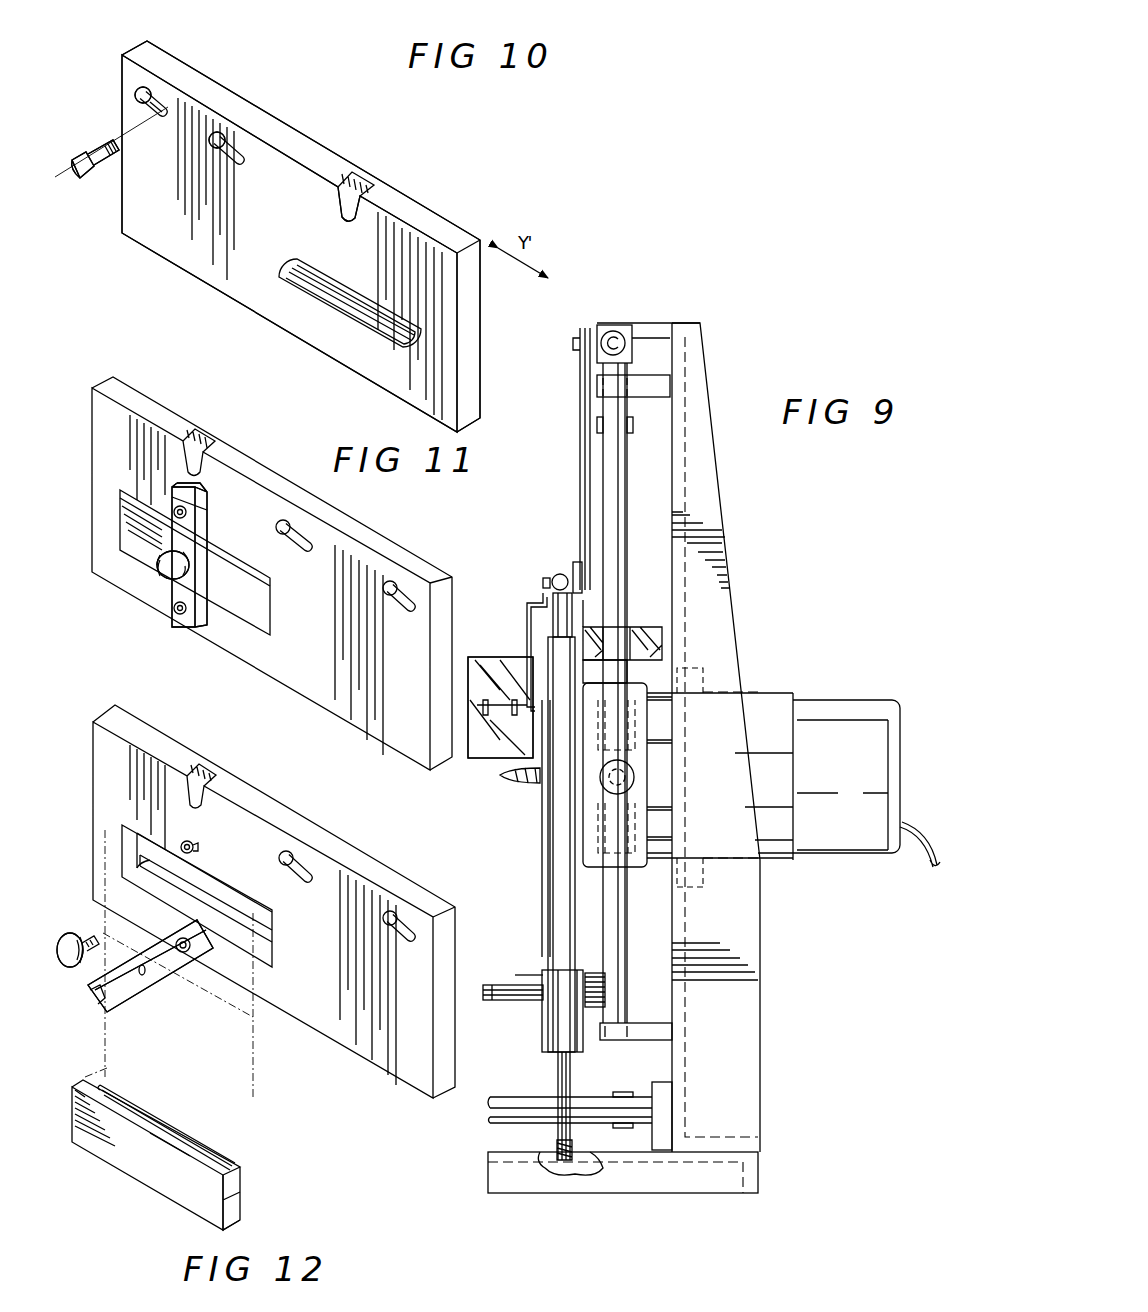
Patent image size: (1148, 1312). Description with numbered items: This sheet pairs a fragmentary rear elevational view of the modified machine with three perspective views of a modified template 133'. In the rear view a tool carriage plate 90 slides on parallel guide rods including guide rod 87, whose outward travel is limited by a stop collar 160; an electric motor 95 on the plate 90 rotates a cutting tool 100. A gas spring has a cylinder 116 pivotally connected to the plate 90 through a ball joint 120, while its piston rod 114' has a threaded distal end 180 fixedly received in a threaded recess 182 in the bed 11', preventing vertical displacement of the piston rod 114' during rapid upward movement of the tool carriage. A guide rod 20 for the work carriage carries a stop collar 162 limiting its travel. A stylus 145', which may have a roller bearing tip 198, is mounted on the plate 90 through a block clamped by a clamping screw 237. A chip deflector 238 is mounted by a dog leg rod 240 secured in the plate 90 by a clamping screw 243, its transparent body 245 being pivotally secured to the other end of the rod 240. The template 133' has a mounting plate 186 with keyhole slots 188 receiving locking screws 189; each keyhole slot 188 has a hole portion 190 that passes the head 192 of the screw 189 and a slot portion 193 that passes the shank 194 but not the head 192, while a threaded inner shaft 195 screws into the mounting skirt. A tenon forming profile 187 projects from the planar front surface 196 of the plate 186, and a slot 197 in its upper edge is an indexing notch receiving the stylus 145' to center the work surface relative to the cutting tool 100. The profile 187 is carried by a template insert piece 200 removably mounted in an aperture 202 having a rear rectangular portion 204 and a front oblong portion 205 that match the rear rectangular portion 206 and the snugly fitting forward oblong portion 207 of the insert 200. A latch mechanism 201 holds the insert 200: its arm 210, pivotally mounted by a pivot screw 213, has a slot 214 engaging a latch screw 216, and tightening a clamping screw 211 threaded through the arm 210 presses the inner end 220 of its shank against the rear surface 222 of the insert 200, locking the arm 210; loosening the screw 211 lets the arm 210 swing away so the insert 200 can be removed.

In FIG. 10, the template 133' is at (301, 232).
In FIG. 10, the mounting plate 186 is at (330, 148).
In FIG. 11, the mounting plate 186 is at (260, 473).
In FIG. 12, the mounting plate 186 is at (267, 810).
In FIG. 10, the tenon forming profile 187 is at (350, 320).
In FIG. 12, the tenon forming profile 187 is at (240, 1177).
In FIG. 10, the keyhole slot 188 is at (127, 98).
In FIG. 11, the keyhole slot 188 is at (300, 557).
In FIG. 10, the locking screw 189 is at (102, 135).
In FIG. 10, the hole portion 190 is at (147, 85).
In FIG. 10, the head 192 is at (83, 174).
In FIG. 10, the slot portion 193 is at (160, 92).
In FIG. 10, the shank 194 is at (108, 168).
In FIG. 10, the threaded inner shaft 195 is at (113, 160).
In FIG. 10, the planar front surface 196 is at (237, 135).
In FIG. 10, the slot 197 is at (366, 185).
In FIG. 11, the slot 197 is at (203, 448).
In FIG. 12, the slot 197 is at (210, 775).
In FIG. 11, the template insert piece 200 is at (252, 598).
In FIG. 12, the template insert piece 200 is at (155, 1167).
In FIG. 11, the latch mechanism 201 is at (152, 578).
In FIG. 12, the latch mechanism 201 is at (157, 1033).
In FIG. 12, the aperture 202 is at (258, 900).
In FIG. 12, the rear rectangular portion 204 is at (275, 963).
In FIG. 12, the front oblong portion 205 is at (273, 933).
In FIG. 12, the rear rectangular portion 206 is at (240, 1218).
In FIG. 12, the forward oblong portion 207 is at (243, 1188).
In FIG. 11, the arm 210 is at (213, 530).
In FIG. 12, the arm 210 is at (147, 987).
In FIG. 11, the clamping screw 211 is at (172, 572).
In FIG. 12, the clamping screw 211 is at (72, 967).
In FIG. 11, the pivot screw 213 is at (180, 617).
In FIG. 12, the pivot screw 213 is at (187, 957).
In FIG. 11, the slot 214 is at (207, 517).
In FIG. 12, the slot 214 is at (107, 1002).
In FIG. 11, the latch screw 216 is at (175, 507).
In FIG. 12, the latch screw 216 is at (190, 842).
In FIG. 12, the inner end 220 is at (97, 933).
In FIG. 12, the rear surface 222 is at (180, 1190).
In FIG. 9, the guide rod 87 is at (612, 463).
In FIG. 9, the plate 90 is at (547, 845).
In FIG. 9, the electric motor 95 is at (847, 857).
In FIG. 9, the cutting tool 100 is at (533, 783).
In FIG. 9, the cylinder 116 is at (555, 887).
In FIG. 9, the ball joint 120 is at (560, 573).
In FIG. 9, the stop collar 160 is at (597, 430).
In FIG. 9, the dog leg rod 240 is at (532, 600).
In FIG. 9, the clamping screw 243 is at (545, 578).
In FIG. 9, the body 245 is at (500, 657).
In FIG. 9, the chip deflector 238 is at (478, 765).
In FIG. 9, the clamping screw 237 is at (600, 973).
In FIG. 9, the roller bearing tip 198 is at (485, 978).
In FIG. 9, the stylus 145' is at (519, 949).
In FIG. 9, the piston rod 114' is at (583, 1091).
In FIG. 9, the stop collar 162 is at (617, 1093).
In FIG. 9, the guide rod 20 is at (587, 1125).
In FIG. 9, the distal end 180 is at (558, 1148).
In FIG. 9, the threaded recess 182 is at (587, 1180).
In FIG. 9, the bed 11' is at (623, 1186).